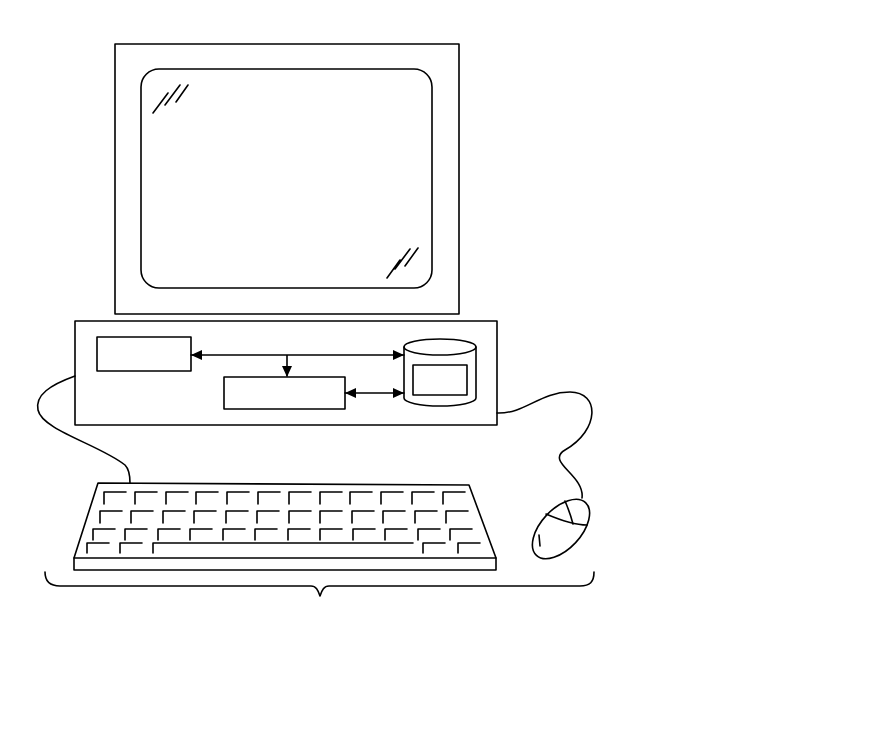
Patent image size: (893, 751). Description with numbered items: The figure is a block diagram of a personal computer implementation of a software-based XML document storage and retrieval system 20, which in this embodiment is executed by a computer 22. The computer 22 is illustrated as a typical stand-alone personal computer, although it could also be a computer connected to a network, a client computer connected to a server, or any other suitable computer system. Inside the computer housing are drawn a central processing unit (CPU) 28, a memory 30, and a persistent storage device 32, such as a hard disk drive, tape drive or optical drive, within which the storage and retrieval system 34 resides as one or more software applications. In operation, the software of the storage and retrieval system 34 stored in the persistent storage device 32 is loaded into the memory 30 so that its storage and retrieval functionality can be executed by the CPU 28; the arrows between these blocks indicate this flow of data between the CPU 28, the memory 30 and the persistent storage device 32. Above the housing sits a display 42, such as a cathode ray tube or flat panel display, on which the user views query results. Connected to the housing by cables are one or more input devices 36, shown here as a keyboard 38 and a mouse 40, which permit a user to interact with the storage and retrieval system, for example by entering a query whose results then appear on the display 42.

The XML document storage and retrieval system 20 is at (534, 58).
The computer 22 is at (110, 173).
The display 42 is at (459, 181).
The central processing unit (CPU) 28 is at (97, 357).
The memory 30 is at (287, 410).
The persistent storage device 32 is at (476, 354).
The storage and retrieval system 34 is at (462, 387).
The input devices 36 is at (319, 597).
The keyboard 38 is at (80, 538).
The mouse 40 is at (592, 514).